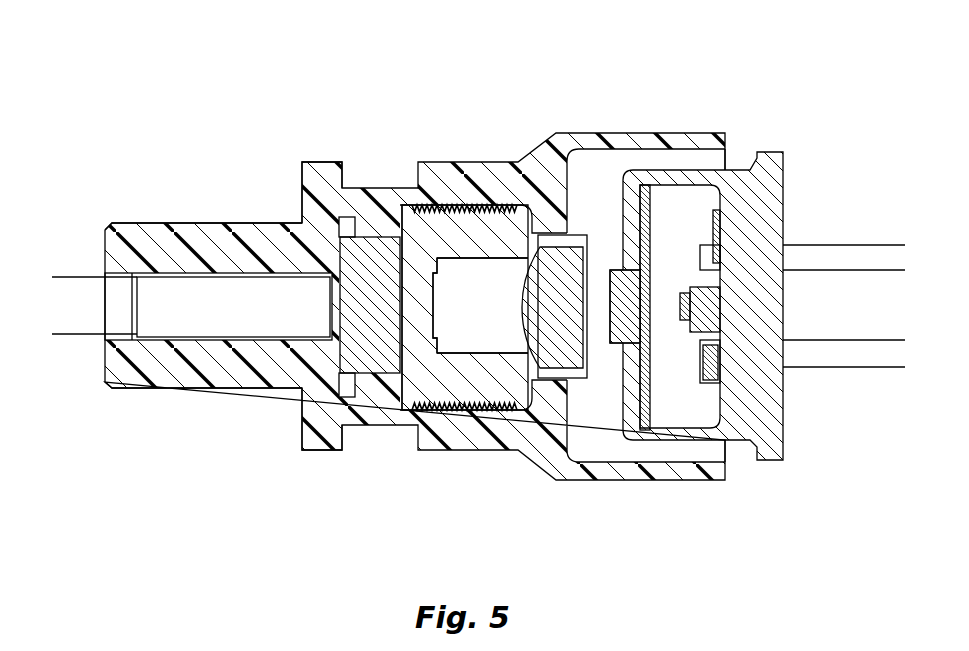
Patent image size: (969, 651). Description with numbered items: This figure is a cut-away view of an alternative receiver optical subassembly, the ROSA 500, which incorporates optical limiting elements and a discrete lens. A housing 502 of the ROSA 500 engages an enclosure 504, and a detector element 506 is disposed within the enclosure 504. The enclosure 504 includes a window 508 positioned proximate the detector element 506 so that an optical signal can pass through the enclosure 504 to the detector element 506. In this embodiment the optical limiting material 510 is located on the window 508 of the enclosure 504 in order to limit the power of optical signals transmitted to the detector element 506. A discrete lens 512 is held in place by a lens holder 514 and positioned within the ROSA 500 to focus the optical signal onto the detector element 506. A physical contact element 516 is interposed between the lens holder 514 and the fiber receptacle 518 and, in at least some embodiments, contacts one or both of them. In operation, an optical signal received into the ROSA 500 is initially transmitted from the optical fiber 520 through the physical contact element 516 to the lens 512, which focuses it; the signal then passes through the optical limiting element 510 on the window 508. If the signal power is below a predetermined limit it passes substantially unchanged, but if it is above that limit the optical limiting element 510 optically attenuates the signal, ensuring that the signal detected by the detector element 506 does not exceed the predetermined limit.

The ROSA 500 is at (166, 50).
The housing 502 is at (322, 160).
The enclosure 504 is at (740, 170).
The detector element 506 is at (683, 294).
The window 508 is at (655, 208).
The optical limiting material 510 is at (606, 330).
The discrete lens 512 is at (520, 313).
The lens holder 514 is at (447, 410).
The physical contact element 516 is at (372, 237).
The fiber receptacle 518 is at (247, 343).
The optical fiber 520 is at (190, 338).